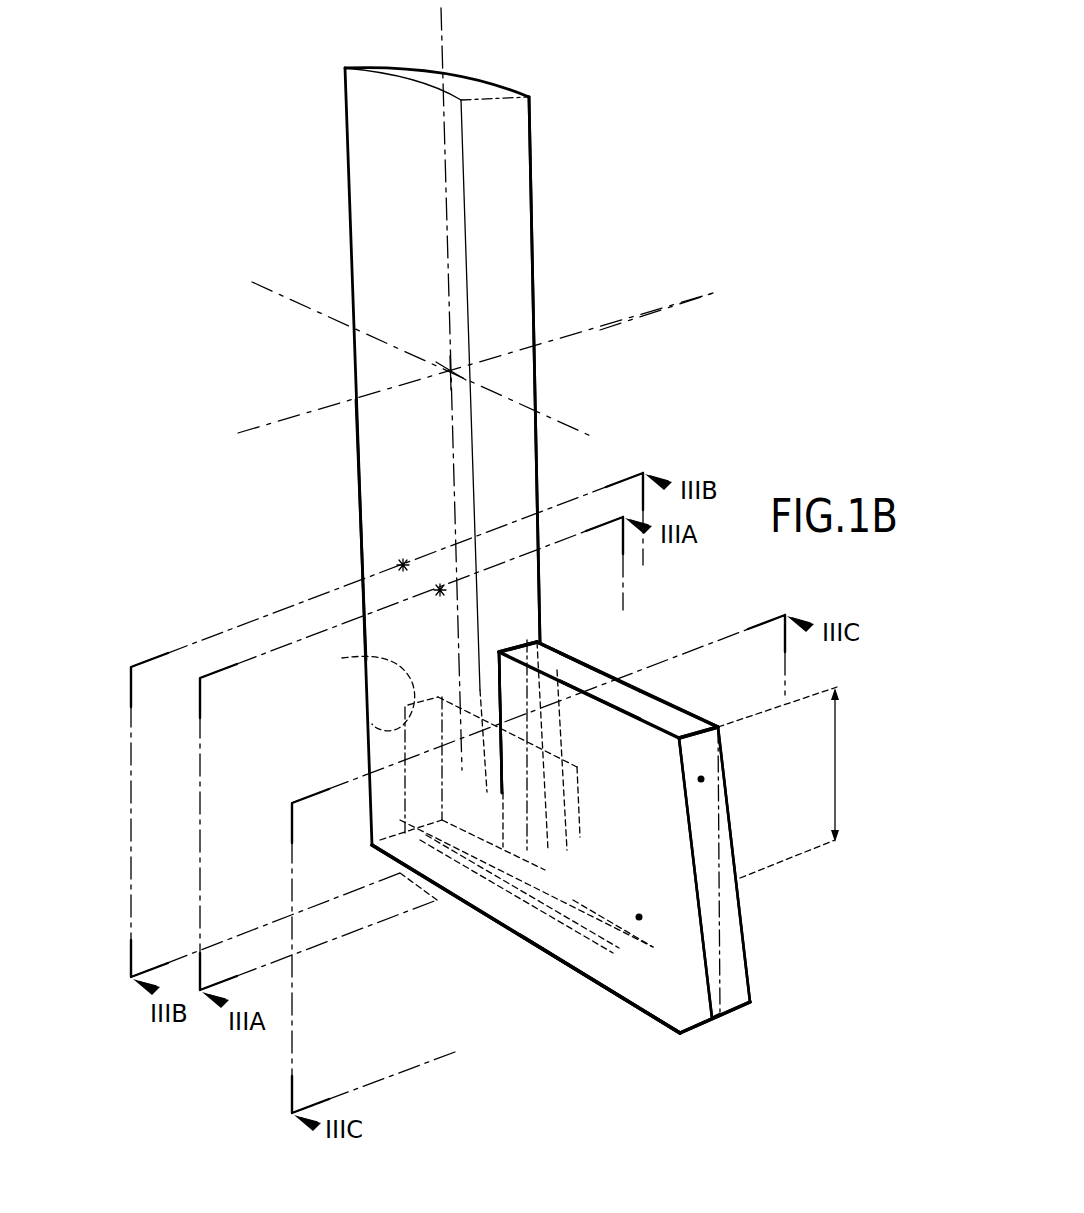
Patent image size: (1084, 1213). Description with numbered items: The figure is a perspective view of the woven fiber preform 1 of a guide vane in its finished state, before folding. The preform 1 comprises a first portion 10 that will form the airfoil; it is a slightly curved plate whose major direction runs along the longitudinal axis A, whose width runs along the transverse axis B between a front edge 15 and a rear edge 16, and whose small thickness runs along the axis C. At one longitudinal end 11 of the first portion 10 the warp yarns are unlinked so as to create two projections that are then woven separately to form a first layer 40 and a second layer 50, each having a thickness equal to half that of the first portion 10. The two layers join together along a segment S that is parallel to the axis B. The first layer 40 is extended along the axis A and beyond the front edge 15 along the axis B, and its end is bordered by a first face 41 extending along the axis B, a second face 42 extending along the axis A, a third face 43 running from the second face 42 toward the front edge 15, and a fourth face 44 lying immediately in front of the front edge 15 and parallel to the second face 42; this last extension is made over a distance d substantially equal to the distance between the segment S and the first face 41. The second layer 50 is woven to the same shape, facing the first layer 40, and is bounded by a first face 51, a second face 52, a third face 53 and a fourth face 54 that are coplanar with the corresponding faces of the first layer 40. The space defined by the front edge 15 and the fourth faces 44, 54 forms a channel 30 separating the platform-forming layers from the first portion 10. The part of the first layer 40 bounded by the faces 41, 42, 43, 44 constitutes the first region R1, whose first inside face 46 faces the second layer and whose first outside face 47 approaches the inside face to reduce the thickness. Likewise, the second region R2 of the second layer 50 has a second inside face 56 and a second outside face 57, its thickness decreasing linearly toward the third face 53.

The preform 1 is at (705, 391).
The first portion 10 is at (368, 142).
The longitudinal end 11 is at (430, 723).
The front edge 15 is at (512, 142).
The rear edge 16 is at (376, 476).
The channel 30 is at (515, 643).
The first layer 40 is at (772, 972).
The first face 41 is at (463, 852).
The second face 42 is at (730, 901).
The third face 43 is at (672, 702).
The fourth face 44 is at (536, 649).
The first inside face 46 is at (694, 740).
The first outside face 47 is at (700, 822).
The second layer 50 is at (577, 975).
The first face 51 is at (410, 851).
The second face 52 is at (692, 940).
The third face 53 is at (585, 682).
The fourth face 54 is at (497, 683).
The second inside face 56 is at (629, 742).
The second outside face 57 is at (600, 870).
The longitudinal axis A is at (442, 20).
The transverse axis B is at (273, 292).
The thickness axis C is at (248, 426).
The segment S is at (367, 687).
The first region R1 is at (705, 778).
The second region R2 is at (639, 917).
The distance d is at (787, 782).